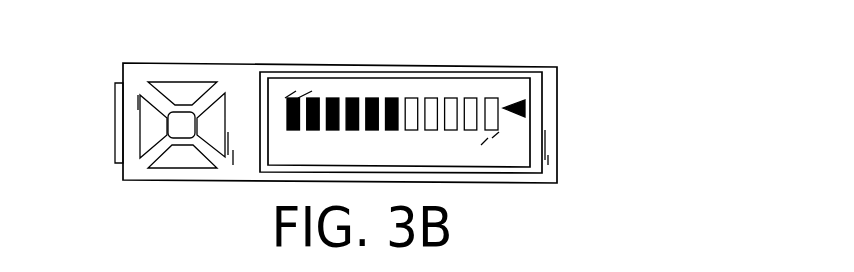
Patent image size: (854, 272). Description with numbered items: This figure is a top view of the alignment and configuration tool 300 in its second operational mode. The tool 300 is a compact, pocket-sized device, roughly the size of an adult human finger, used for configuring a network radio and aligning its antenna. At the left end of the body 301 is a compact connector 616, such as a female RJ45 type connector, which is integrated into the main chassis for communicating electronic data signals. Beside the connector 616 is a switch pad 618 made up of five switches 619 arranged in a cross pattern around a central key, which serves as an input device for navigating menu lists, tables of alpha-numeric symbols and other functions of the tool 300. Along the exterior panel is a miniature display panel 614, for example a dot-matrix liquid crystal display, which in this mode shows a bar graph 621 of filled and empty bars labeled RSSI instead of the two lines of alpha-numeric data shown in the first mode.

The alignment and configuration tool 300 is at (600, 153).
The body 301 is at (342, 67).
The miniature display panel 614 is at (502, 93).
The connector 616 is at (112, 140).
The switch pad 618 is at (237, 72).
The switches 619 is at (168, 112).
The bar graph 621 is at (525, 108).